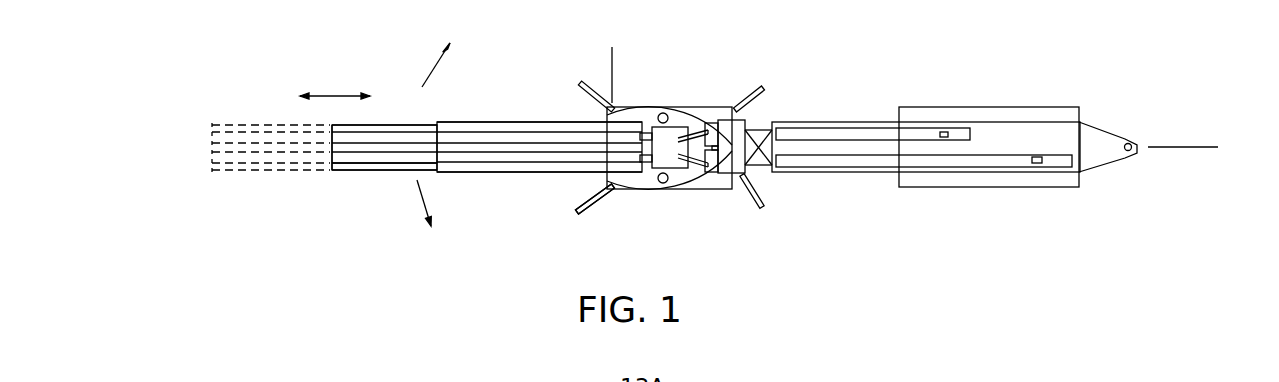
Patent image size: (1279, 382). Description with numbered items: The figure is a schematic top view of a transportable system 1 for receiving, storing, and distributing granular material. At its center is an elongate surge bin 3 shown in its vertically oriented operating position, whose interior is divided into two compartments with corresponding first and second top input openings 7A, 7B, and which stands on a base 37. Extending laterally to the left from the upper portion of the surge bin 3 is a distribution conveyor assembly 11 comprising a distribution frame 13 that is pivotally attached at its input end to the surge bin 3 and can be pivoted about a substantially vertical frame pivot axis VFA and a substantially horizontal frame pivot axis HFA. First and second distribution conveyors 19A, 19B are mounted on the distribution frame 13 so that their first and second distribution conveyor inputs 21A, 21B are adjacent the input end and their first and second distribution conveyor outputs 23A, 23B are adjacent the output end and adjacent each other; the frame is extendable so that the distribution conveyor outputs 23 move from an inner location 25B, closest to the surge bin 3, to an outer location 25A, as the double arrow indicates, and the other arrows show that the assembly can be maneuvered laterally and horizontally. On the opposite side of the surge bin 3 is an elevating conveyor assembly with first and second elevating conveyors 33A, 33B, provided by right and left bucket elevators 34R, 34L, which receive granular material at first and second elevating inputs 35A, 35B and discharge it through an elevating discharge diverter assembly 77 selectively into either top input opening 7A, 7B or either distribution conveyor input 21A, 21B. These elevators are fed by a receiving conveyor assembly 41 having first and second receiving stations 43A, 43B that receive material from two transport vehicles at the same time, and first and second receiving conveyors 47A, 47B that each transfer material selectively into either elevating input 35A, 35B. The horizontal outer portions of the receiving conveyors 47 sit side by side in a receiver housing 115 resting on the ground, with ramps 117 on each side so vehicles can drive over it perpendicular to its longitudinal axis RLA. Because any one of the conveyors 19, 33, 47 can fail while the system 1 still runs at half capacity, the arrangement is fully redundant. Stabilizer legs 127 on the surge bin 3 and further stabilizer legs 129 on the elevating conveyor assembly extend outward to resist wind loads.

The transportable system 1 is at (1090, 47).
The surge bin 3 is at (650, 107).
The first top input opening 7A is at (652, 190).
The second top input opening 7B is at (677, 107).
The distribution conveyor assembly 11 is at (470, 115).
The distribution frame 13 is at (485, 173).
The distribution conveyors 19 is at (448, 173).
The first distribution conveyor 19A is at (372, 173).
The second distribution conveyor 19B is at (362, 126).
The first distribution conveyor input 21A is at (598, 190).
The second distribution conveyor input 21B is at (583, 120).
The distribution conveyor outputs 23 is at (328, 138).
The first distribution conveyor output 23A is at (330, 163).
The second distribution conveyor output 23B is at (384, 147).
The outer location 25A is at (213, 177).
The inner location 25B is at (333, 177).
The elevating conveyors 33 is at (735, 110).
The first elevating conveyor 33A is at (733, 175).
The second elevating conveyor 33B is at (711, 134).
The left bucket elevator 34L is at (711, 161).
The right bucket elevator 34R is at (749, 99).
The first elevating input 35A is at (750, 176).
The second elevating input 35B is at (765, 125).
The base 37 is at (688, 192).
The receiving conveyor assembly 41 is at (950, 90).
The first receiving station 43A is at (1038, 165).
The second receiving station 43B is at (945, 130).
The receiving conveyors 47 is at (925, 175).
The first receiving conveyor 47A is at (924, 161).
The second receiving conveyor 47B is at (865, 122).
The elevating discharge diverter assembly 77 is at (623, 190).
The receiver housing 115 is at (838, 122).
The ramps 117 is at (1080, 112).
The stabilizer legs 127 is at (572, 208).
The stabilizer legs 129 is at (752, 203).
The horizontal frame pivot axis HFA is at (612, 60).
The vertical frame pivot axis VFA is at (620, 148).
The longitudinal axis RLA is at (1192, 147).